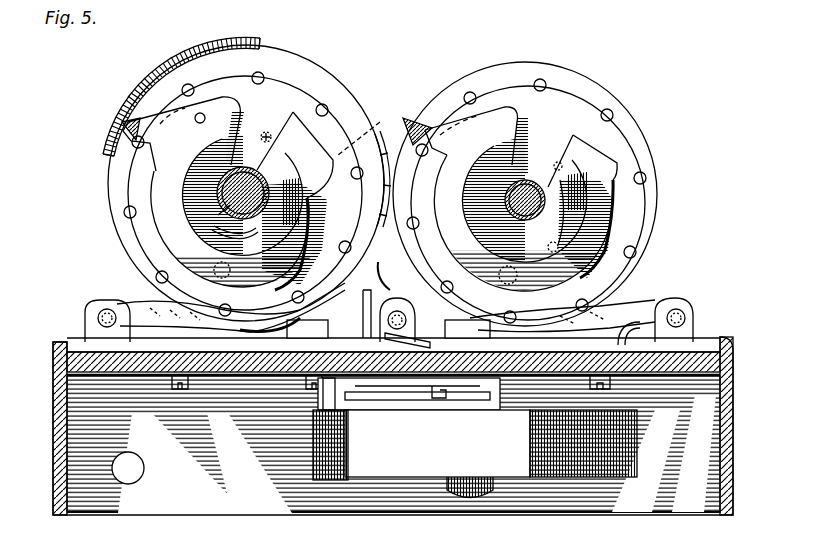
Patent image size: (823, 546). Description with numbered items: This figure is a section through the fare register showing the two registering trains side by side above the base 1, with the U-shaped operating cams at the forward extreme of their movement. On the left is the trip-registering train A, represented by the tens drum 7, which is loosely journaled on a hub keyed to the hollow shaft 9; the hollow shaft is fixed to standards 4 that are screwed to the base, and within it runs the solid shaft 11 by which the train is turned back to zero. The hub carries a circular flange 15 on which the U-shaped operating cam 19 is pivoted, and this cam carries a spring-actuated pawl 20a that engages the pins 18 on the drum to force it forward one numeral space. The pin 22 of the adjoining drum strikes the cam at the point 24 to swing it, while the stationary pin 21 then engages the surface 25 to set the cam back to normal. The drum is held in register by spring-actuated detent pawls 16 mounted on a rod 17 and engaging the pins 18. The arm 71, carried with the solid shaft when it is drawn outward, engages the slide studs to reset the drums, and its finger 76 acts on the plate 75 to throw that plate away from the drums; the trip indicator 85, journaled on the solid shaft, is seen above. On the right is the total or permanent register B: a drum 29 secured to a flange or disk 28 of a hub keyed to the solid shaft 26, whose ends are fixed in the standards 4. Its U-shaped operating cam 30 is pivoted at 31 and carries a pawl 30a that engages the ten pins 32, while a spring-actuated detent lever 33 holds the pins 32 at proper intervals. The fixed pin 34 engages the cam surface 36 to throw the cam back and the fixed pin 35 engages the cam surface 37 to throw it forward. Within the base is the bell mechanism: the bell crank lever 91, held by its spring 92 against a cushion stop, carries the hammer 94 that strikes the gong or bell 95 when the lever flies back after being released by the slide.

The base 1 is at (393, 426).
The standards 4 is at (388, 332).
The tens drum 7 is at (130, 246).
The hollow shaft 9 is at (240, 168).
The solid shaft 11 is at (215, 218).
The circular flange 15 is at (148, 221).
The detent pawls 16 is at (134, 305).
The rod 17 is at (94, 314).
The pins 18 is at (326, 104).
The U-shaped operating cam 19 is at (226, 198).
The pawl 20a is at (120, 128).
The stationary pin 21 is at (266, 132).
The pin 22 is at (387, 156).
The point 24 is at (300, 168).
The surface 25 is at (235, 236).
The solid shaft 26 is at (519, 210).
The flanges or disks 28 is at (610, 150).
The drums 29 is at (570, 78).
The U-shaped operating cam 30 is at (497, 199).
The pawl 30a is at (417, 118).
The pivot 31 is at (463, 293).
The pins 32 is at (537, 80).
The detent levers 33 is at (654, 310).
The pin 34 is at (561, 152).
The pin 35 is at (557, 251).
The cam surface 36 is at (554, 165).
The cam surface 37 is at (590, 208).
The arm 71 is at (369, 132).
The plate 75 is at (378, 319).
The finger 76 is at (386, 265).
The trip indicator 85 is at (142, 80).
The bell crank lever 91 is at (380, 402).
The spring 92 is at (439, 399).
The hammer 94 is at (342, 424).
The gong or bell 95 is at (477, 438).
The trip-registering train A is at (123, 196).
The total or permanent register B is at (652, 222).